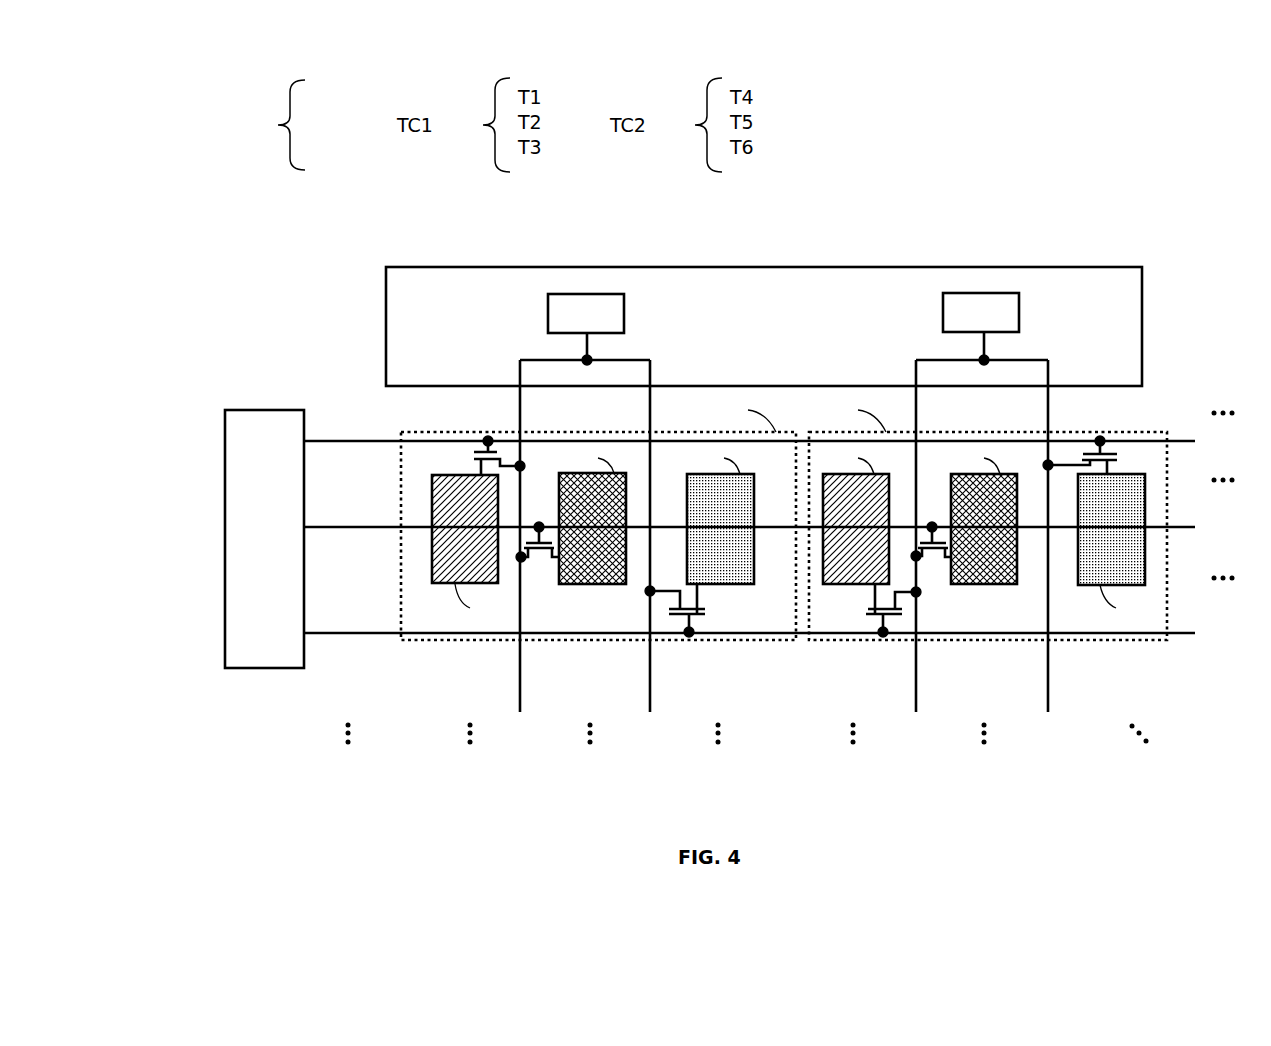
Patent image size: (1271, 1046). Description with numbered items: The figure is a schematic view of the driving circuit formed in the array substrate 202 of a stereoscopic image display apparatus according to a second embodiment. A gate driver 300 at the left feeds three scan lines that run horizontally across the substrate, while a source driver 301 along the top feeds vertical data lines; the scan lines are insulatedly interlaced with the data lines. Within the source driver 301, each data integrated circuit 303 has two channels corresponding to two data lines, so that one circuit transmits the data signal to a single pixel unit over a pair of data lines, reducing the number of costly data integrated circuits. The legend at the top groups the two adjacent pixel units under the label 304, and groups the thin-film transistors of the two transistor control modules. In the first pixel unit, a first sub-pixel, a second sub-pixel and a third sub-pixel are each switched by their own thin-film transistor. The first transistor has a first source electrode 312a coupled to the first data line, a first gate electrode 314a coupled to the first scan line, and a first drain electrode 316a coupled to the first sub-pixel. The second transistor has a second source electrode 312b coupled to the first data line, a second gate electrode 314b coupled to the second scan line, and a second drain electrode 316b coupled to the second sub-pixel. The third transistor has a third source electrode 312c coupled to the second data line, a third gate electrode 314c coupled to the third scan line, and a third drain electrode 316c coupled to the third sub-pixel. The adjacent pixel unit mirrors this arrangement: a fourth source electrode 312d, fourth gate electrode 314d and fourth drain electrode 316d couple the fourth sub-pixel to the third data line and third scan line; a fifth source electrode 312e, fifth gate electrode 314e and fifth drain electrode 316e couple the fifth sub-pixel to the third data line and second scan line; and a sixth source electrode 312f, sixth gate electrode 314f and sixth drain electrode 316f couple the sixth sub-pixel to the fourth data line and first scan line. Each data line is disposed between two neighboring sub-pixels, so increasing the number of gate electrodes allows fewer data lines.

The array substrate 202 is at (1232, 157).
The gate driver 300 is at (264, 408).
The source driver 301 is at (752, 267).
The data integrated circuit 303 is at (585, 294).
The pixel unit group 304 is at (273, 125).
The first source electrode 312a is at (500, 458).
The first gate electrode 314a is at (485, 447).
The first drain electrode 316a is at (480, 468).
The second source electrode 312b is at (524, 562).
The second gate electrode 314b is at (540, 552).
The second drain electrode 316b is at (553, 556).
The third source electrode 312c is at (650, 592).
The third gate electrode 314c is at (692, 634).
The third drain electrode 316c is at (698, 596).
The fourth source electrode 312d is at (908, 596).
The fourth gate electrode 314d is at (876, 622).
The fourth drain electrode 316d is at (870, 605).
The fifth source electrode 312e is at (925, 558).
The fifth gate electrode 314e is at (935, 552).
The fifth drain electrode 316e is at (948, 558).
The sixth source electrode 312f is at (1088, 462).
The sixth gate electrode 314f is at (1101, 440).
The sixth drain electrode 316f is at (1109, 466).